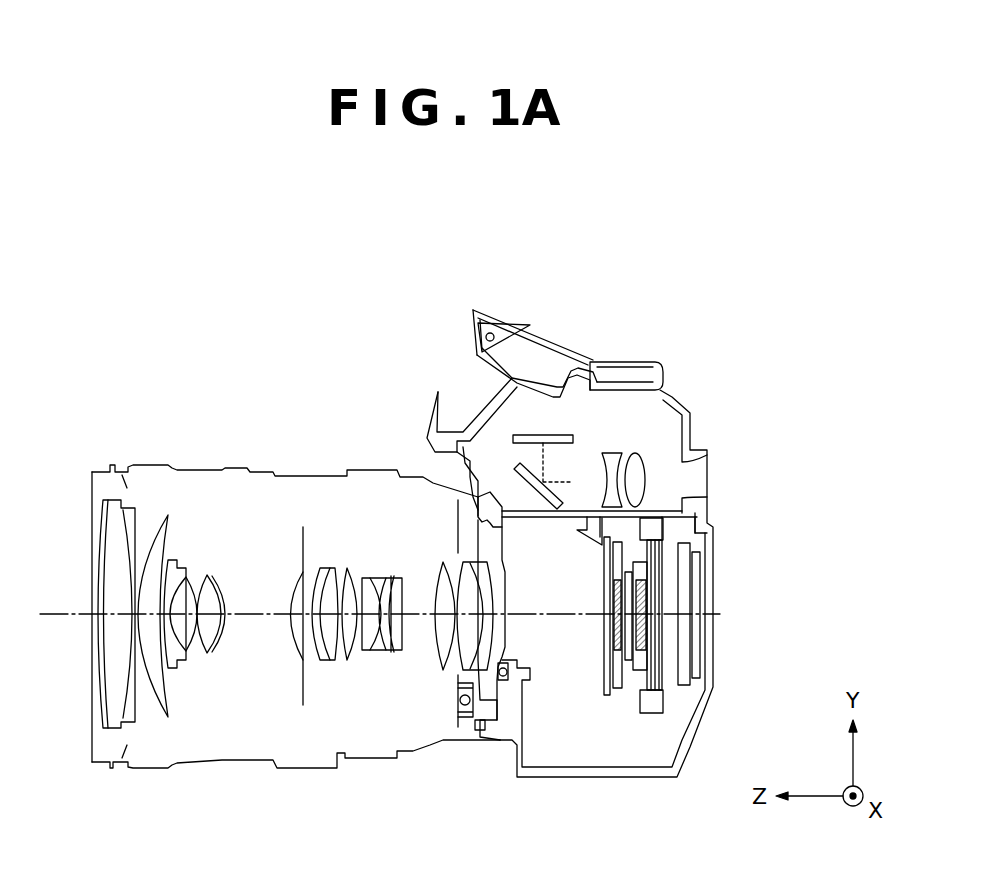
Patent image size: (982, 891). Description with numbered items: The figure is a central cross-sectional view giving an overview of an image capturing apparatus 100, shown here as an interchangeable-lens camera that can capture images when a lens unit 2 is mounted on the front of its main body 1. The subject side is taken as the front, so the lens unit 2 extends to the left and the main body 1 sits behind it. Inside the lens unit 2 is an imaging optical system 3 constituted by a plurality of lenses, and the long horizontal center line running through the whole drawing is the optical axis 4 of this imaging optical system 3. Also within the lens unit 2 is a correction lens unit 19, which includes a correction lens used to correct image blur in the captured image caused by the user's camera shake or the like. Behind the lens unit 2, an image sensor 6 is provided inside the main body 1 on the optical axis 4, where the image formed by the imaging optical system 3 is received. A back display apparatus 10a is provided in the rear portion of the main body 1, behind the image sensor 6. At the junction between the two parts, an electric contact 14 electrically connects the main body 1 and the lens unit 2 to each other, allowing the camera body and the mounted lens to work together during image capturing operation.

The image capturing apparatus 100 is at (563, 316).
The main body 1 is at (682, 380).
The lens unit 2 is at (222, 468).
The imaging optical system 3 is at (215, 730).
The optical axis 4 is at (55, 618).
The image sensor 6 is at (650, 628).
The back display apparatus 10a is at (697, 655).
The electric contact 14 is at (477, 727).
The correction lens unit 19 is at (368, 672).